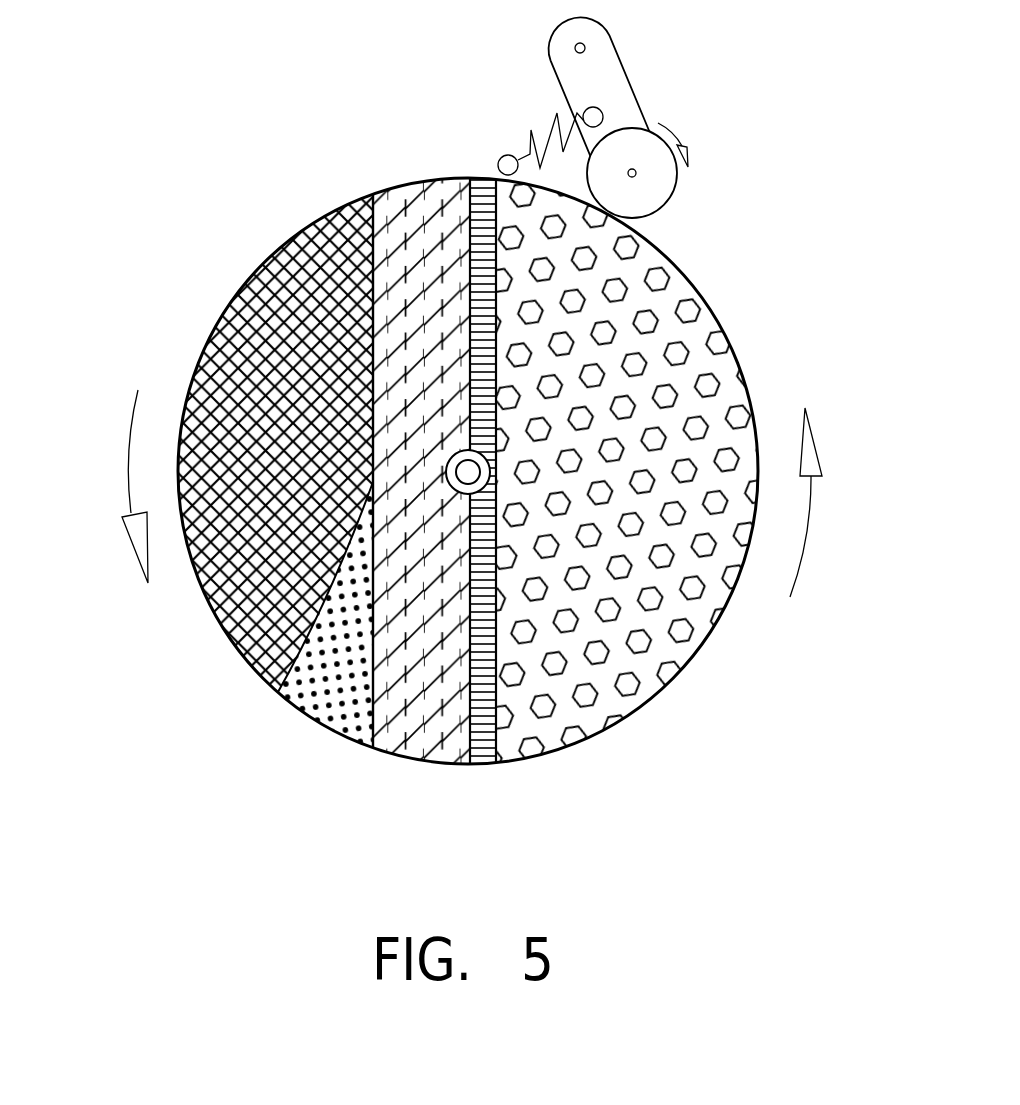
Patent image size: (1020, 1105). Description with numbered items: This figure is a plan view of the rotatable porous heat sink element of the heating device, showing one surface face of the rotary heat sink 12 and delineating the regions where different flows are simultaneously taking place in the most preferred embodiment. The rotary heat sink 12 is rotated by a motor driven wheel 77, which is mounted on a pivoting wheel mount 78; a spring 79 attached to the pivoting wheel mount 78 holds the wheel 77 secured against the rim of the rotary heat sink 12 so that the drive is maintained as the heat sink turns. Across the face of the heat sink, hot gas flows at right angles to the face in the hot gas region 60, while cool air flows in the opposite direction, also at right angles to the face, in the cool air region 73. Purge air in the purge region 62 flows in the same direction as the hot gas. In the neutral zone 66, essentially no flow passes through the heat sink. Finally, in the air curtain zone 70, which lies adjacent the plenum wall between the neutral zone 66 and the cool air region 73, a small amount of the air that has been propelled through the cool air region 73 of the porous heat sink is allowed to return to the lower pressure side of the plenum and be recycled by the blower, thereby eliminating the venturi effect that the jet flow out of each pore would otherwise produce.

The rotary heat sink 12 is at (705, 656).
The hot gas region 60 is at (277, 430).
The purge air region 62 is at (335, 678).
The neutral zone 66 is at (433, 702).
The air curtain zone 70 is at (485, 765).
The cool air region 73 is at (614, 455).
The motor driven wheel 77 is at (670, 200).
The pivoting wheel mount 78 is at (603, 82).
The spring 79 is at (542, 123).